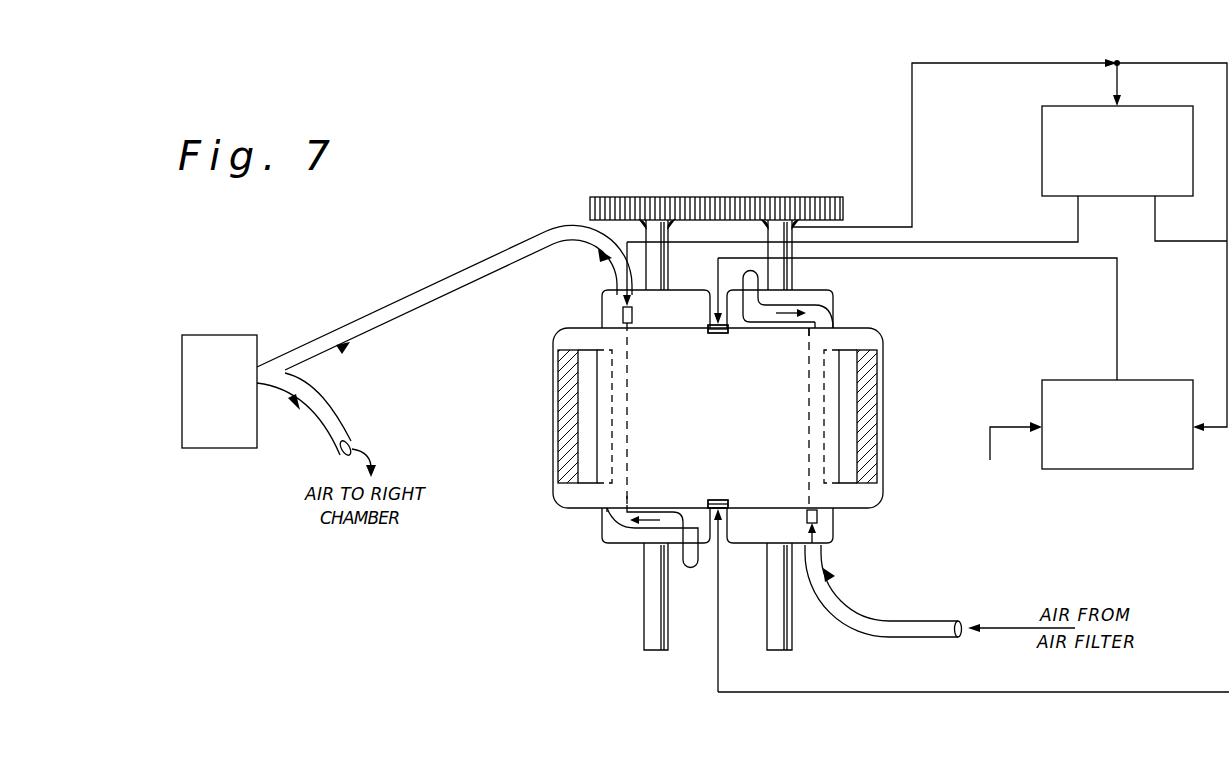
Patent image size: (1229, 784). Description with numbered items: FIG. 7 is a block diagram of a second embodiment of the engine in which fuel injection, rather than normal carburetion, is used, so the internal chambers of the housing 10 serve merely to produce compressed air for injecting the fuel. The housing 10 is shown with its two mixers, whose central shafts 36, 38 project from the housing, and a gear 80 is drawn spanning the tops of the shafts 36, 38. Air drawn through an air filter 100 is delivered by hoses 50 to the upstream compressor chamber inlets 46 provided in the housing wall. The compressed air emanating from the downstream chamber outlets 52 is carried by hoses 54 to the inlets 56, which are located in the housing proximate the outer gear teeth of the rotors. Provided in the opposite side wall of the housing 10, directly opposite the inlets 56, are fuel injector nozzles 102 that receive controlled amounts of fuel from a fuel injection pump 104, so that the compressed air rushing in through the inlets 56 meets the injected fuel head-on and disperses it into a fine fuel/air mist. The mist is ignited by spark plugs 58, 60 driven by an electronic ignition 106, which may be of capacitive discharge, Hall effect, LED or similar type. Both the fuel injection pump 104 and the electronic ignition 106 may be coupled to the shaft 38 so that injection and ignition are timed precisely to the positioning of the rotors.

The housing 10 is at (532, 519).
The central shaft 36 is at (654, 218).
The central shaft 38 is at (783, 221).
The inlet 46 is at (605, 310).
The hose 50 is at (402, 312).
The outlet 52 is at (753, 283).
The hose 54 is at (800, 320).
The inlet 56 is at (812, 330).
The spark plug 58 is at (716, 336).
The spark plug 60 is at (718, 416).
The timing gear 80 is at (702, 204).
The air filter 100 is at (183, 356).
The fuel injector nozzle 102 is at (632, 320).
The fuel injection pump 104 is at (1048, 380).
The electronic ignition 106 is at (1042, 148).